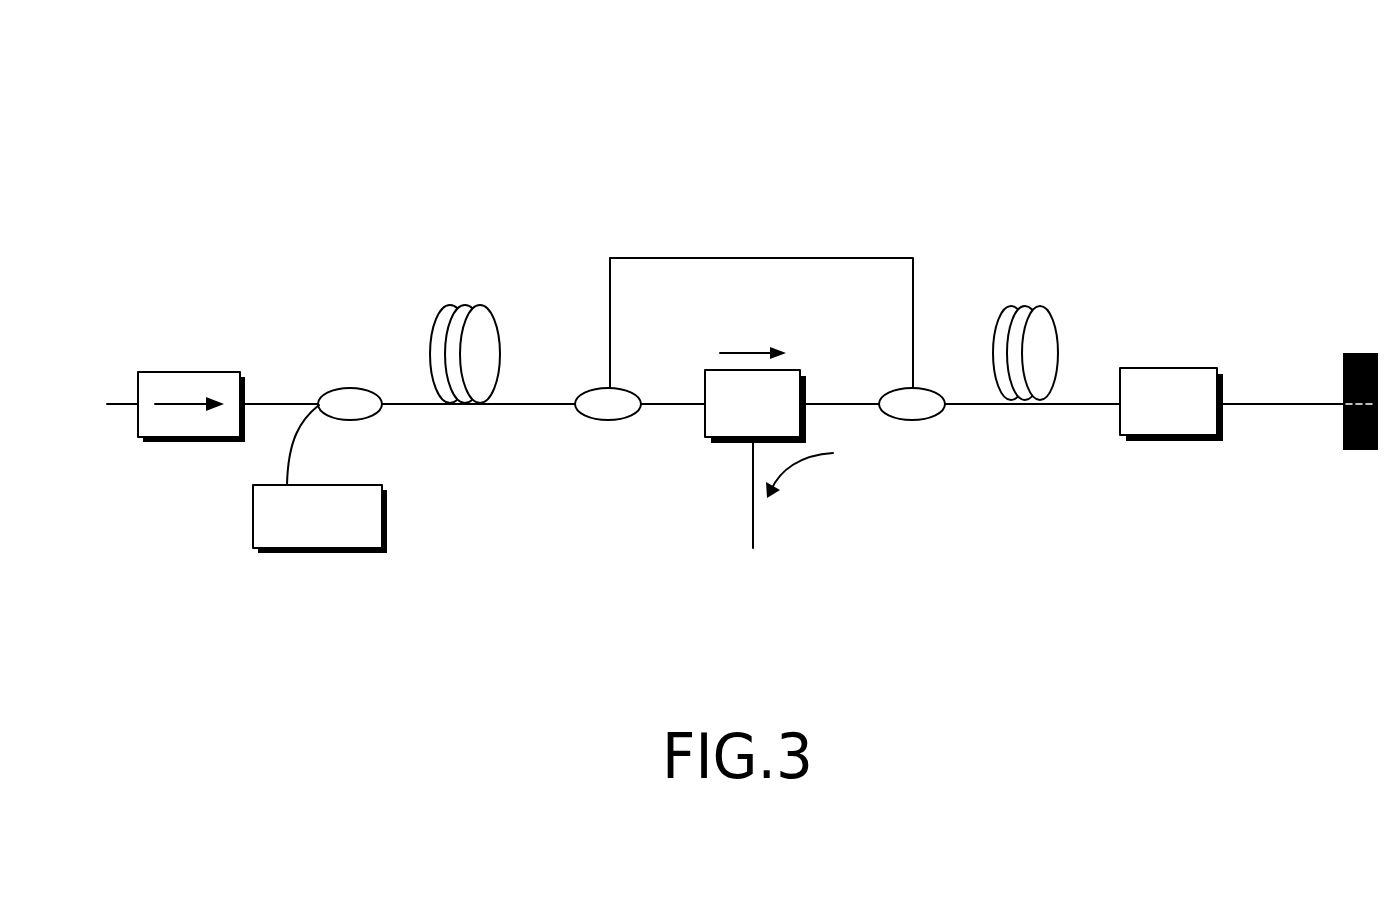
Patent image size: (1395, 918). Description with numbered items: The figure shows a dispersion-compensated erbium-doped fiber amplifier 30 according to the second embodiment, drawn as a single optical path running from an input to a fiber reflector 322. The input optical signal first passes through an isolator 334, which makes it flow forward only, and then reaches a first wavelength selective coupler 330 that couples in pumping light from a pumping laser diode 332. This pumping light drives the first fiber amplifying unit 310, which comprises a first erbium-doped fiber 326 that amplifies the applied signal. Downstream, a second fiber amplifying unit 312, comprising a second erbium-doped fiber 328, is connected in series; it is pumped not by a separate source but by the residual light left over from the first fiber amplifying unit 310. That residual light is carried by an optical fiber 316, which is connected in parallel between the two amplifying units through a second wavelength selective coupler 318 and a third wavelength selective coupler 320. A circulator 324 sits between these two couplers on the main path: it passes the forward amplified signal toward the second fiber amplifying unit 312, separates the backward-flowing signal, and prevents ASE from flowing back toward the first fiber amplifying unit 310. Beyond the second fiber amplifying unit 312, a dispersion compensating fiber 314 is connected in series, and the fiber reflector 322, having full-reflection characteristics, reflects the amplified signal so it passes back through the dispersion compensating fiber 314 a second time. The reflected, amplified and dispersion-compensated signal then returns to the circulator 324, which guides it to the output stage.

The dispersion-compensated erbium-doped fiber amplifier 30 is at (768, 163).
The first fiber amplifying unit 310 is at (463, 303).
The second fiber amplifying unit 312 is at (1023, 299).
The dispersion compensating fiber 314 is at (1171, 441).
The optical fiber 316 is at (848, 258).
The second wavelength selective coupler 318 is at (597, 421).
The third wavelength selective coupler 320 is at (889, 392).
The fiber reflector 322 is at (1343, 440).
The circulator 324 is at (717, 443).
The first erbium-doped fiber 326 is at (484, 307).
The second erbium-doped fiber 328 is at (1042, 308).
The first wavelength selective coupler 330 is at (320, 402).
The pumping laser diode 332 is at (316, 554).
The isolator 334 is at (186, 441).